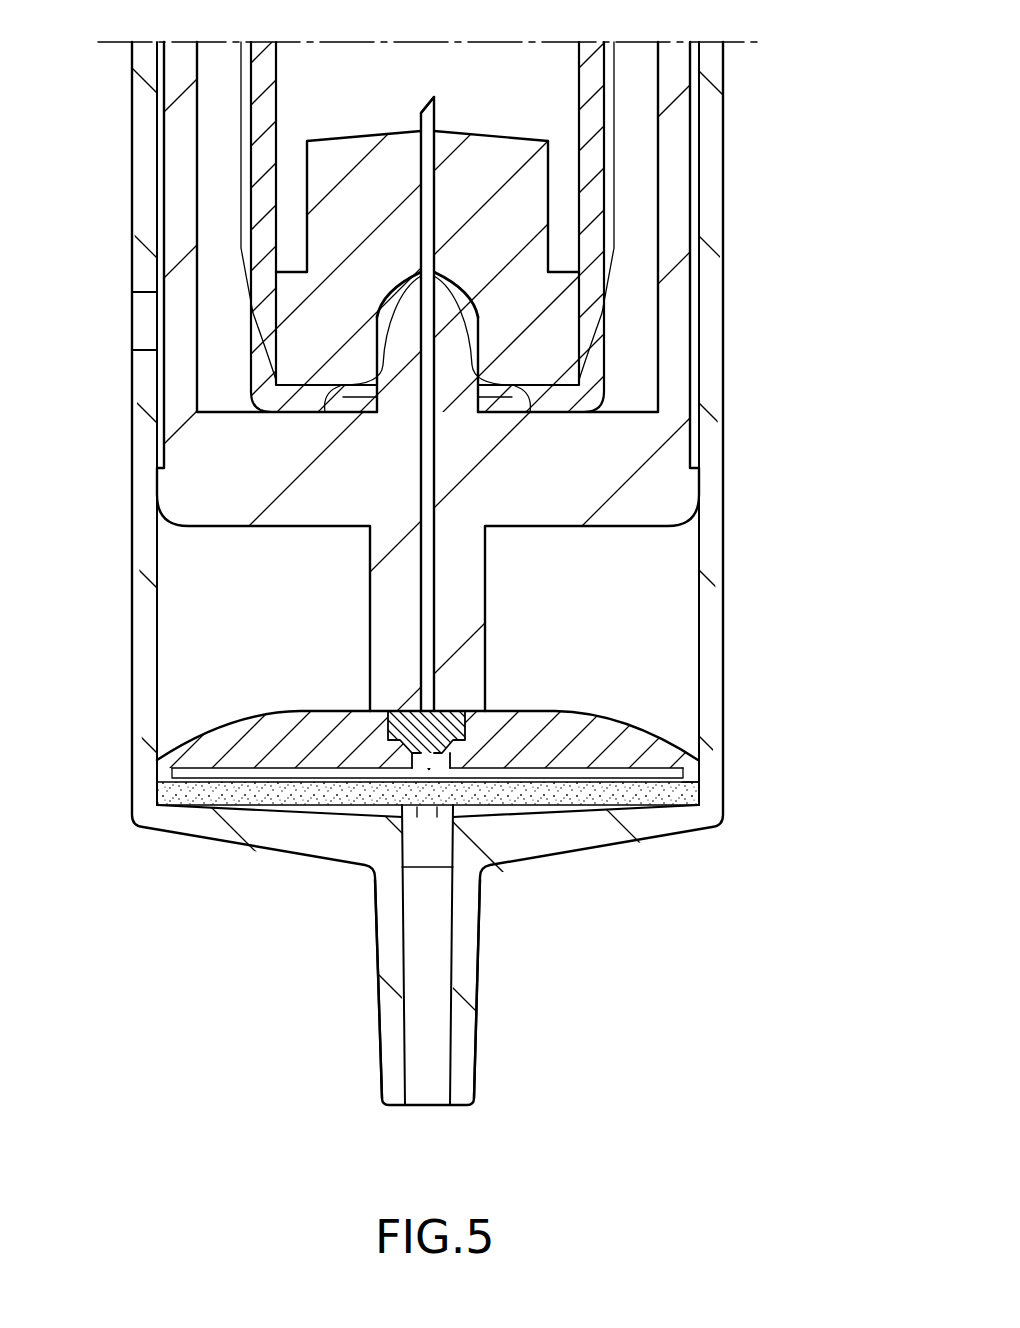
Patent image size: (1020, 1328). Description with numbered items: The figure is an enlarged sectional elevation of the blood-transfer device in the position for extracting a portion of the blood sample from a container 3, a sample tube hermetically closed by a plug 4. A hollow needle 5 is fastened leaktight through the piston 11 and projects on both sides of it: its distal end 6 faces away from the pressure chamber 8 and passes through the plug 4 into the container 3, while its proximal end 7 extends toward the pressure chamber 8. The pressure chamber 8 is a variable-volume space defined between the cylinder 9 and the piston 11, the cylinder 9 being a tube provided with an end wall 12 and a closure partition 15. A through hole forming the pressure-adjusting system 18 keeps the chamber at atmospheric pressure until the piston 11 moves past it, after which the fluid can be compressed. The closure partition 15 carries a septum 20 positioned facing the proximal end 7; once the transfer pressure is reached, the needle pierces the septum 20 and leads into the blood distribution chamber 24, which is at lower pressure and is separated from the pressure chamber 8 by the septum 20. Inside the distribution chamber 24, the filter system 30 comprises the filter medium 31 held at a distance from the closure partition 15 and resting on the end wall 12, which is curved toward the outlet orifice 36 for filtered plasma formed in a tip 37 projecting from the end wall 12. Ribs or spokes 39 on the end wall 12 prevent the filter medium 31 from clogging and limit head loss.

The container 3 is at (592, 60).
The plug 4 is at (352, 148).
The hollow needle 5 is at (412, 463).
The distal end 6 is at (438, 100).
The proximal end 7 is at (430, 768).
The pressure chamber 8 is at (590, 605).
The cylinder 9 is at (746, 505).
The piston 11 is at (672, 188).
The end wall 12 is at (290, 833).
The closure partition 15 is at (605, 732).
The system for adjusting the pressure 18 is at (146, 327).
The septum 20 is at (446, 708).
The blood distribution chamber 24 is at (227, 775).
The filter system 30 is at (704, 778).
The filter medium 31 is at (571, 795).
The outlet orifice 36 is at (437, 1023).
The tip 37 is at (380, 1067).
The ribs or spokes 39 is at (445, 815).